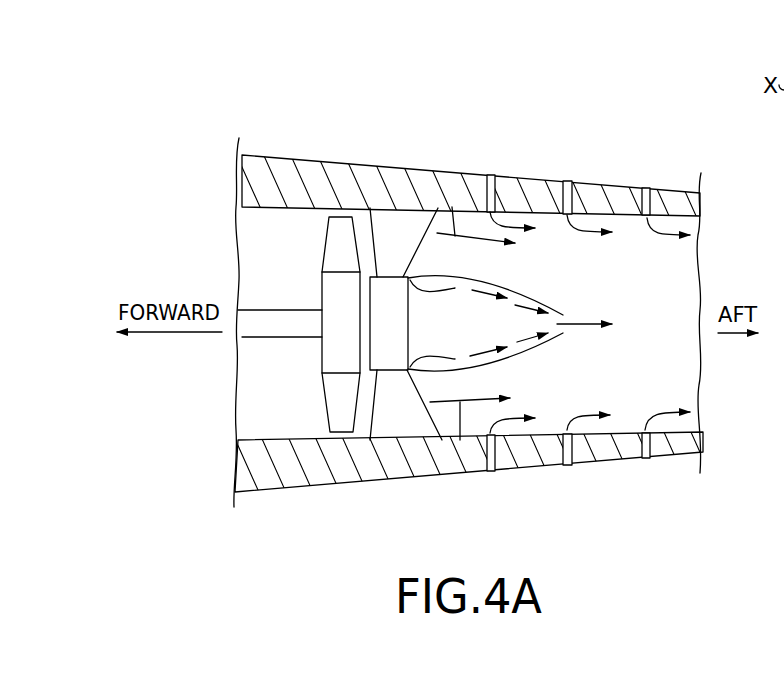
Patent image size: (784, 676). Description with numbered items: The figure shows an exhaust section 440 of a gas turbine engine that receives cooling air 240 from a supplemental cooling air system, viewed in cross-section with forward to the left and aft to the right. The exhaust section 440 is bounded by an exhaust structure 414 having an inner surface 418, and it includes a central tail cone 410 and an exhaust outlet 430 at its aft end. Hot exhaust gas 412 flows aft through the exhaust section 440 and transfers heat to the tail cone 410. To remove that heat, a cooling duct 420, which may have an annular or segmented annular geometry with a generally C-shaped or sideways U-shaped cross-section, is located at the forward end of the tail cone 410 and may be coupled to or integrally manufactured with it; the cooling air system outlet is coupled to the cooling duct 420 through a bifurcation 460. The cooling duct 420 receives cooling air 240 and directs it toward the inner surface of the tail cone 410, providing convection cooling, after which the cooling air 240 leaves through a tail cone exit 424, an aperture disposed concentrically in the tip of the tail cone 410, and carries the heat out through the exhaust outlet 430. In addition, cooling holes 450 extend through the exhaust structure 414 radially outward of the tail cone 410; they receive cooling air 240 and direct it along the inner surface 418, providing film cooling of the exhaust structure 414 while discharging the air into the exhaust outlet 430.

The exhaust section 440 is at (645, 123).
The cooling holes 450 is at (643, 190).
The exhaust structure 414 is at (402, 175).
The inner surface 418 is at (622, 213).
The bifurcation 460 is at (389, 220).
The cooling duct 420 is at (407, 364).
The exhaust gas 412 is at (452, 207).
The tail cone 410 is at (537, 297).
The cooling air 240 is at (482, 288).
The tail cone exit 424 is at (563, 333).
The exhaust outlet 430 is at (683, 348).